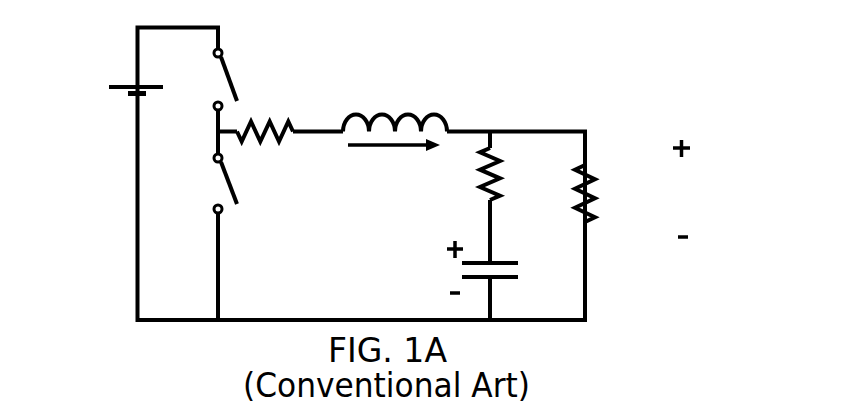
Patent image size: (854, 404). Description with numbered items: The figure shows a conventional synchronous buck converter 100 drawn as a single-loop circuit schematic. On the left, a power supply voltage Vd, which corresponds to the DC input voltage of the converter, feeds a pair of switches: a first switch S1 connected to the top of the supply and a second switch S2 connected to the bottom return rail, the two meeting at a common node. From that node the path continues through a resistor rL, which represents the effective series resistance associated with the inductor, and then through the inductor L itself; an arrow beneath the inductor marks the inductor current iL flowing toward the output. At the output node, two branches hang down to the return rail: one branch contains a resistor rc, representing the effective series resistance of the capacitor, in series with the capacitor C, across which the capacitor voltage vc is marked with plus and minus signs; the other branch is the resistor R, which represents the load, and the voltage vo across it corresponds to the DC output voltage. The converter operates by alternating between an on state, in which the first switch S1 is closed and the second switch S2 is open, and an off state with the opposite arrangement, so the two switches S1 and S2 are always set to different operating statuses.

The synchronous buck converter 100 is at (393, 160).
The power supply voltage Vd is at (103, 89).
The first switch S1 is at (204, 79).
The second switch S2 is at (204, 183).
The inductor effective series resistance rL is at (265, 105).
The inductor L is at (395, 104).
The inductor current iL is at (394, 166).
The capacitor effective series resistance rc is at (514, 178).
The capacitor C is at (507, 273).
The capacitor voltage vc is at (436, 267).
The load resistor R is at (606, 193).
The output voltage vo is at (692, 188).